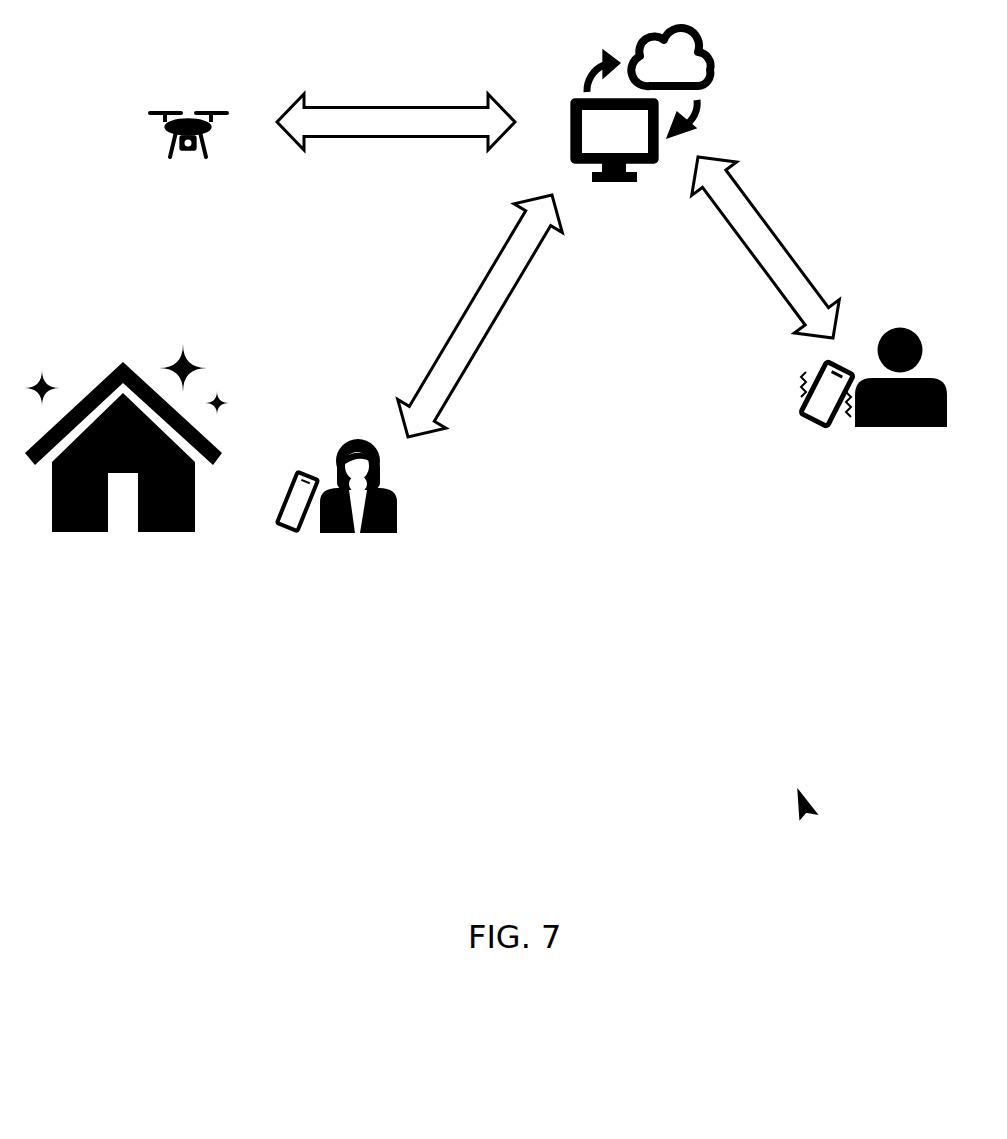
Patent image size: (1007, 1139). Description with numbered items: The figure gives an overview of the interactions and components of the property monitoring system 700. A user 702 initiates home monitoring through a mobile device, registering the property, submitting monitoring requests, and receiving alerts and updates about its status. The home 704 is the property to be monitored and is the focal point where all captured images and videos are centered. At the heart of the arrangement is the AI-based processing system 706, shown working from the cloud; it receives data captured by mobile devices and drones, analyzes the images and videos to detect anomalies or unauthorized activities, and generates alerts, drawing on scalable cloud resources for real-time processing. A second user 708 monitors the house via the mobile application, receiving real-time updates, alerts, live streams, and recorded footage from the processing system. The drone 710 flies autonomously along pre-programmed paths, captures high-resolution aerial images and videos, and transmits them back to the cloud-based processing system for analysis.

The system 700 is at (803, 816).
The user who initiates home monitoring via the user's mobile device 702 is at (787, 412).
The home 704 is at (90, 358).
The AI-based processing system 706 is at (732, 68).
The user with a mobile device monitoring the house 708 is at (400, 503).
The drone 710 is at (143, 134).